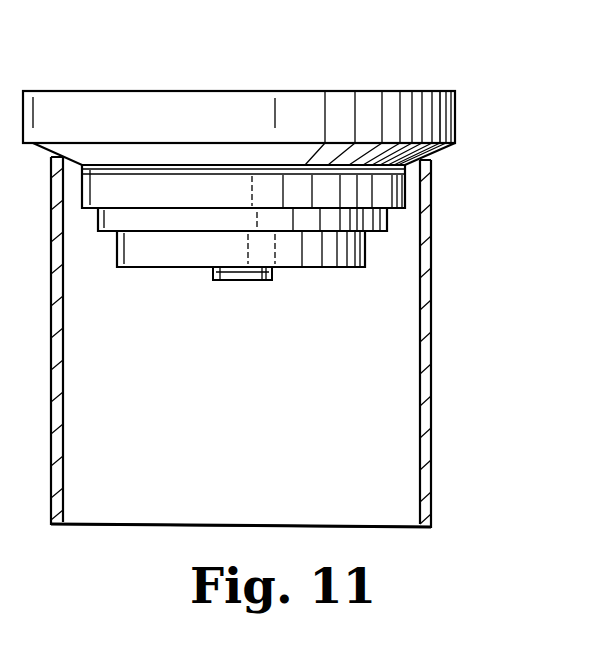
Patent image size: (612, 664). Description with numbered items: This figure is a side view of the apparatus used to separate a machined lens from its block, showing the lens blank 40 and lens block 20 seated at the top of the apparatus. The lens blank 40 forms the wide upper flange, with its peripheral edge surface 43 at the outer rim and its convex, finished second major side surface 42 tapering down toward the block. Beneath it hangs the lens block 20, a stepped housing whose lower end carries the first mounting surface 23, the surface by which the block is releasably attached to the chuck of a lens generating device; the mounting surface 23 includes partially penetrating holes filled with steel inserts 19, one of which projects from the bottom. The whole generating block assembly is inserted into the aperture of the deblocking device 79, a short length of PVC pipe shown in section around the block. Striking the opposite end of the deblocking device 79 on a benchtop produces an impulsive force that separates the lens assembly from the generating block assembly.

The lens blank 40 is at (291, 172).
The peripheral edge surface 43 is at (455, 115).
The second major side surface 42 is at (440, 150).
The lens block 20 is at (301, 250).
The first mounting surface 23 is at (163, 268).
The steel inserts 19 is at (238, 280).
The deblocking device 79 is at (433, 307).